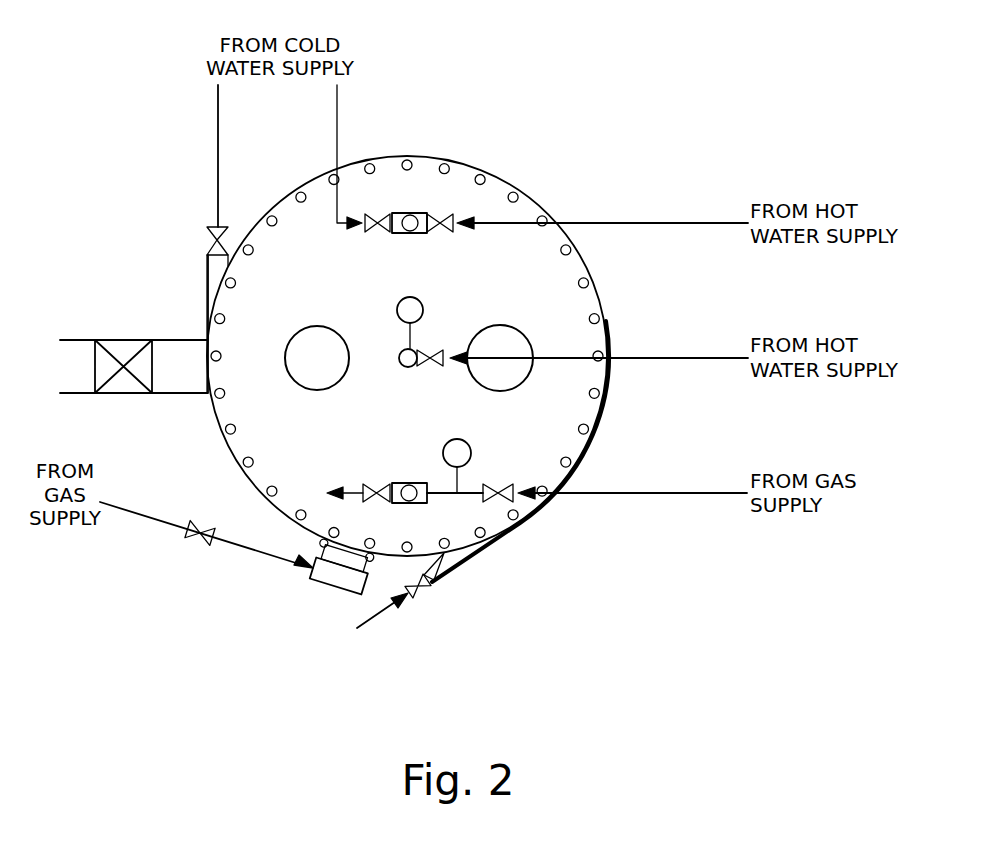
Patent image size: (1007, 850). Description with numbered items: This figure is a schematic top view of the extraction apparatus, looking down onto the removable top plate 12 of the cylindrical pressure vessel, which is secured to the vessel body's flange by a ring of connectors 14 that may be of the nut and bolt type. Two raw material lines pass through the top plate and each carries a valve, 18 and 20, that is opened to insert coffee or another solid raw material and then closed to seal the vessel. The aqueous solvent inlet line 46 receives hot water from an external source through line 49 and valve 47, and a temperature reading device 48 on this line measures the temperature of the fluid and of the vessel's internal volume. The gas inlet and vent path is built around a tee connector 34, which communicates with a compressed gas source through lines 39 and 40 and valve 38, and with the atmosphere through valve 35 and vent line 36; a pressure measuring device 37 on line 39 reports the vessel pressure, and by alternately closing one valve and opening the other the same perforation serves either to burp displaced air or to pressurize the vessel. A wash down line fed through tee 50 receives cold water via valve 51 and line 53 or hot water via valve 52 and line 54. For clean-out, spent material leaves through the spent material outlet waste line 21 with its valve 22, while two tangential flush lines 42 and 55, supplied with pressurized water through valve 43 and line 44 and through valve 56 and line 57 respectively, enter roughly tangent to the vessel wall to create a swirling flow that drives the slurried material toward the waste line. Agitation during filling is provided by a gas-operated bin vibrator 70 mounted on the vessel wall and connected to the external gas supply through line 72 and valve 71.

The top plate 12 is at (512, 178).
The connectors 14 is at (222, 432).
The valve 18 is at (312, 326).
The valve 20 is at (505, 326).
The spent material outlet waste line 21 is at (165, 340).
The valve 22 is at (110, 340).
The tee connector 34 is at (412, 482).
The valve 35 is at (378, 485).
The vent line 36 is at (333, 488).
The pressure measuring device 37 is at (461, 438).
The valve 38 is at (500, 485).
The line 39 is at (455, 498).
The line 40 is at (673, 492).
The tangential flush line 42 is at (470, 566).
The valve 43 is at (428, 591).
The line 44 is at (370, 630).
The aqueous solvent inlet line 46 is at (404, 366).
The valve 47 is at (434, 350).
The temperature reading device 48 is at (396, 311).
The line 49 is at (665, 356).
The tee 50 is at (405, 210).
The valve 51 is at (375, 238).
The valve 52 is at (432, 238).
The line 53 is at (338, 105).
The line 54 is at (641, 222).
The tangential flush line 55 is at (207, 250).
The valve 56 is at (222, 236).
The line 57 is at (220, 148).
The gas-operated bin vibrator 70 is at (332, 578).
The valve 71 is at (196, 542).
The line 72 is at (150, 520).